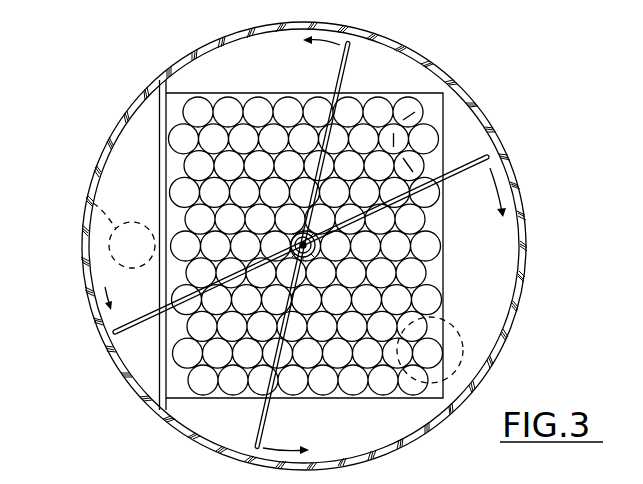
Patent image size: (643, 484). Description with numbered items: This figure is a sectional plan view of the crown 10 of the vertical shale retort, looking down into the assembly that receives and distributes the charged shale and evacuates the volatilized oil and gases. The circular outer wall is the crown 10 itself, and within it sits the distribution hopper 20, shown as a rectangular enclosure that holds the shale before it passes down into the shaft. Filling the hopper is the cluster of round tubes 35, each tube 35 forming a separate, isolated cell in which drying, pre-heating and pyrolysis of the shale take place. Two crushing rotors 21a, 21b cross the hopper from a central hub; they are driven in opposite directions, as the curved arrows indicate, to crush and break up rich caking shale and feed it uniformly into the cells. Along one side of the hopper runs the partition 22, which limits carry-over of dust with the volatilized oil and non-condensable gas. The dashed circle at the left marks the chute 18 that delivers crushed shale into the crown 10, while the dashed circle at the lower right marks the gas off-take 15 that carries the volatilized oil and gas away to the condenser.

The crown 10 is at (490, 277).
The gas off-take 15 is at (457, 332).
The chute 18 is at (89, 210).
The distribution hopper 20 is at (448, 258).
The crushing rotor 21a is at (464, 166).
The crushing rotor 21b is at (340, 73).
The partition 22 is at (160, 174).
The tube 35 is at (306, 246).